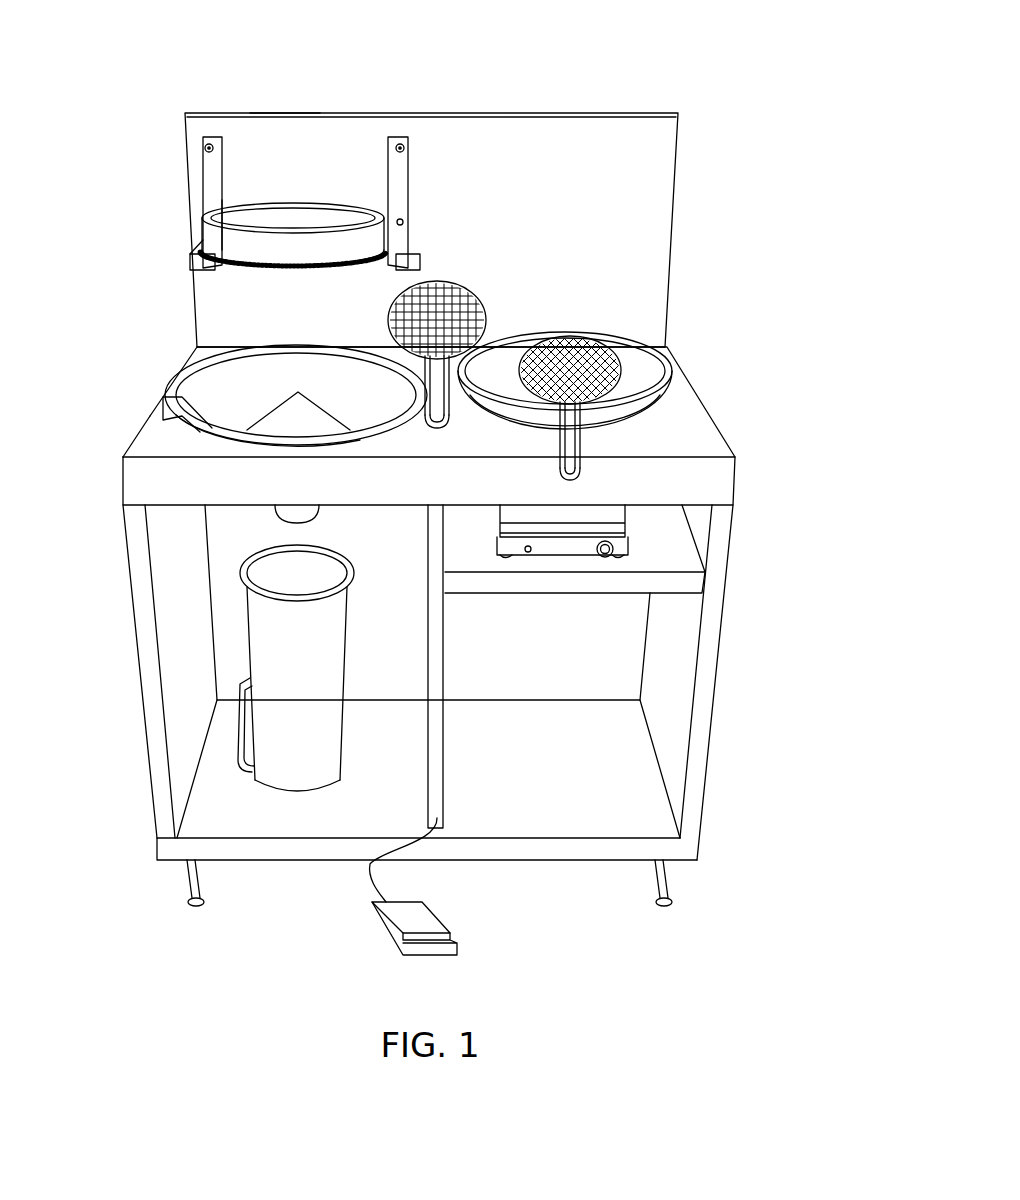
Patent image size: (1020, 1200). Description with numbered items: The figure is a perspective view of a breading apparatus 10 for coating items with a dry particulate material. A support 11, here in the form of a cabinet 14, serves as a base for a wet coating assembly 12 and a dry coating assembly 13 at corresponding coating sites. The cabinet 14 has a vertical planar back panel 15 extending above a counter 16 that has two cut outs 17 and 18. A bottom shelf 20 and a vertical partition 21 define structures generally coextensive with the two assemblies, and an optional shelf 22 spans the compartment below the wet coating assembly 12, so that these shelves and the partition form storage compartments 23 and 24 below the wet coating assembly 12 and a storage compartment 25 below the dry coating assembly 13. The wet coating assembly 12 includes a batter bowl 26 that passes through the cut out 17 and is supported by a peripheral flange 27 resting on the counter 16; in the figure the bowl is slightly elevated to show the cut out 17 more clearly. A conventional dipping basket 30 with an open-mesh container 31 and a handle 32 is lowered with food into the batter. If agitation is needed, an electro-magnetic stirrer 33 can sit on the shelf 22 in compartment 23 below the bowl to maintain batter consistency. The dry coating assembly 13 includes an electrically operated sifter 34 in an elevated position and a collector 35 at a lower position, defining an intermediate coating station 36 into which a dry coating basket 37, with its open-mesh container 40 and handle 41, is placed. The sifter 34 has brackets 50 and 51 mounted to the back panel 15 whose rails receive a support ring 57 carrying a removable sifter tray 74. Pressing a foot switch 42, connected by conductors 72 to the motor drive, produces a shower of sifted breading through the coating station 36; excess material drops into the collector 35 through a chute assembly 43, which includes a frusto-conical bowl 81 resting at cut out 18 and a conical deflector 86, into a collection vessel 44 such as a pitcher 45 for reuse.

The breading apparatus 10 is at (714, 140).
The support 11 is at (686, 373).
The wet coating assembly 12 is at (609, 302).
The dry coating assembly 13 is at (284, 105).
The cabinet 14 is at (711, 615).
The back panel 15 is at (640, 157).
The counter 16 is at (709, 450).
The cut out 17 is at (652, 406).
The cut out 18 is at (163, 406).
The bottom shelf 20 is at (591, 856).
The vertical partition 21 is at (437, 822).
The shelf 22 is at (674, 579).
The storage compartment 23 is at (696, 513).
The storage compartment 24 is at (666, 693).
The storage compartment 25 is at (181, 586).
The batter bowl 26 is at (636, 374).
The peripheral flange 27 is at (632, 347).
The dipping basket 30 is at (548, 338).
The open-mesh container 31 is at (570, 328).
The handle 32 is at (582, 479).
The electro-magnetic stirrer 33 is at (616, 549).
The electrically operated sifter 34 is at (162, 240).
The collector 35 is at (153, 388).
The coating station 36 is at (252, 304).
The dry coating basket 37 is at (449, 284).
The open-mesh container 40 is at (478, 292).
The handle 41 is at (446, 400).
The foot switch 42 is at (385, 925).
The chute assembly 43 is at (246, 386).
The collection vessel 44 is at (290, 645).
The pitcher 45 is at (285, 723).
The bracket 50 is at (199, 150).
The bracket 51 is at (406, 178).
The support ring 57 is at (200, 260).
The conductors 72 is at (372, 870).
The sifter tray 74 is at (195, 206).
The frusto-conical bowl 81 is at (168, 378).
The conical deflector 86 is at (266, 418).